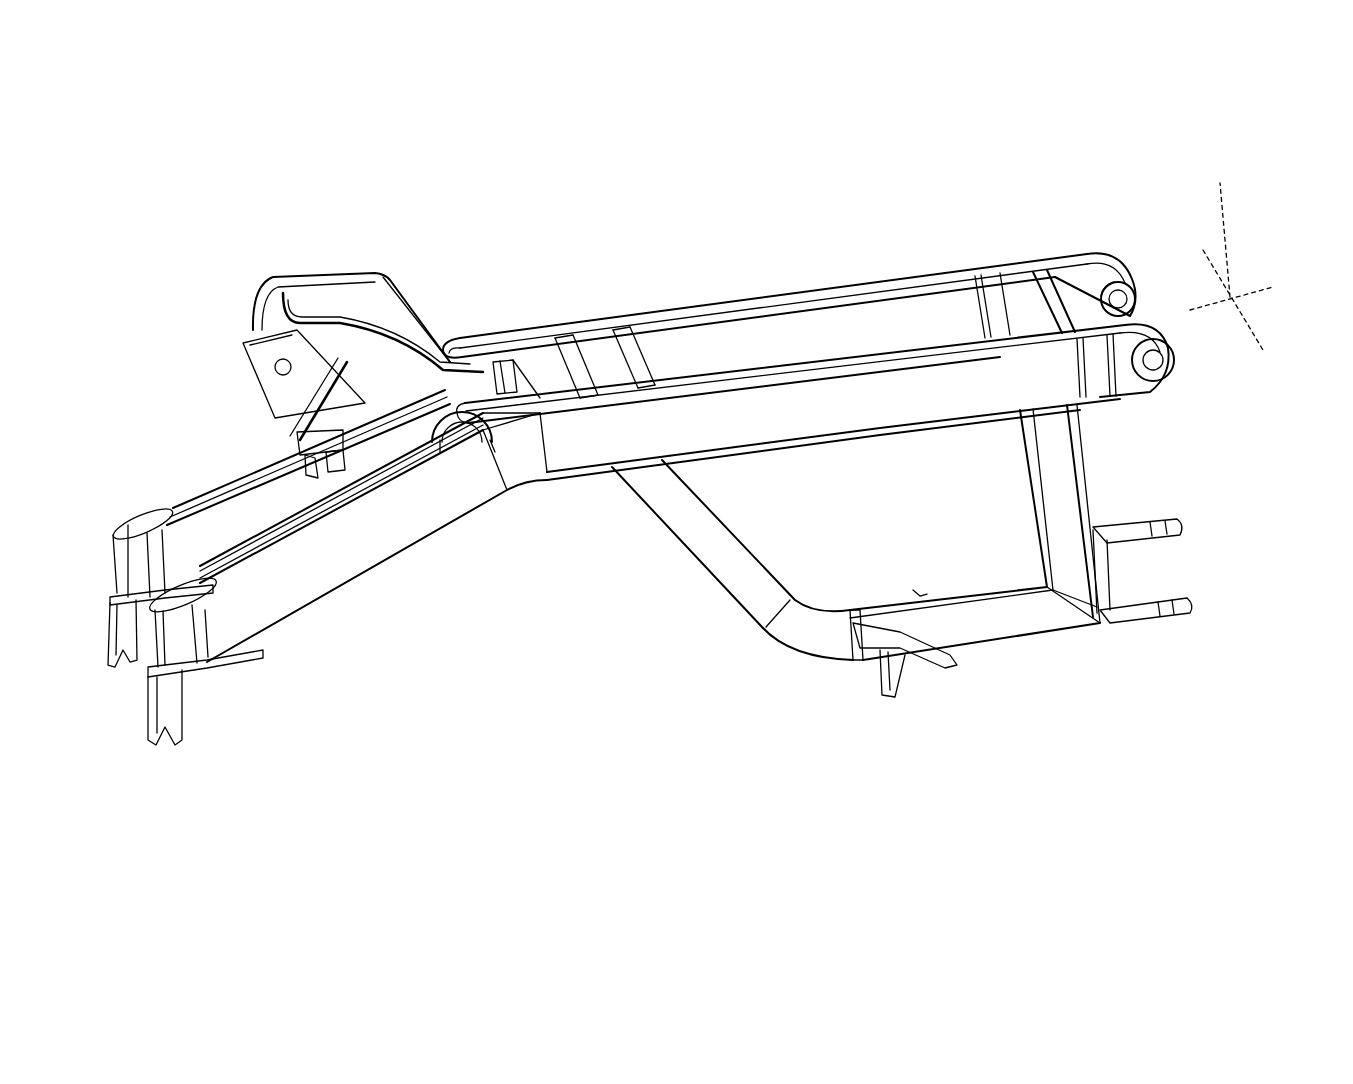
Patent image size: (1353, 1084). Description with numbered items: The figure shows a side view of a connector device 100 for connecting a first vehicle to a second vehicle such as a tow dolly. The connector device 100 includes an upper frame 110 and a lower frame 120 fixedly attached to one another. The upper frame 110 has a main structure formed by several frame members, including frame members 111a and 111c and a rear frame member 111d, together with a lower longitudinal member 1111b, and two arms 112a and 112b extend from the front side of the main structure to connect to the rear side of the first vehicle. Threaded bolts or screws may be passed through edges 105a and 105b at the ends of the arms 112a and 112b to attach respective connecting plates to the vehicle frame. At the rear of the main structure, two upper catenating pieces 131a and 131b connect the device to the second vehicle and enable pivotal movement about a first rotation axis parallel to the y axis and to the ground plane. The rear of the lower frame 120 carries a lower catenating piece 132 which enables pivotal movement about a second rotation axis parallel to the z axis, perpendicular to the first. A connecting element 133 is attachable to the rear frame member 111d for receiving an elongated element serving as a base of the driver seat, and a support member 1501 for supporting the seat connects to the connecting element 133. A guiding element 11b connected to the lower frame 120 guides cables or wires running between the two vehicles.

The connector device 100 is at (408, 168).
The upper frame 110 is at (872, 282).
The frame member 111a is at (786, 292).
The frame member 111c is at (1020, 300).
The rear frame member 111d is at (610, 360).
The lower longitudinal beam 1111b is at (840, 410).
The upper catenating piece 131a is at (1090, 283).
The upper catenating piece 131b is at (1120, 370).
The lower catenating piece 132 is at (1153, 620).
The connecting element 133 is at (533, 390).
The lower frame 120 is at (730, 566).
The guiding element 11b is at (907, 665).
The support member 1501 is at (350, 306).
The arm 112a is at (237, 480).
The arm 112b is at (300, 580).
The edge 105a is at (127, 520).
The edge 105b is at (167, 647).